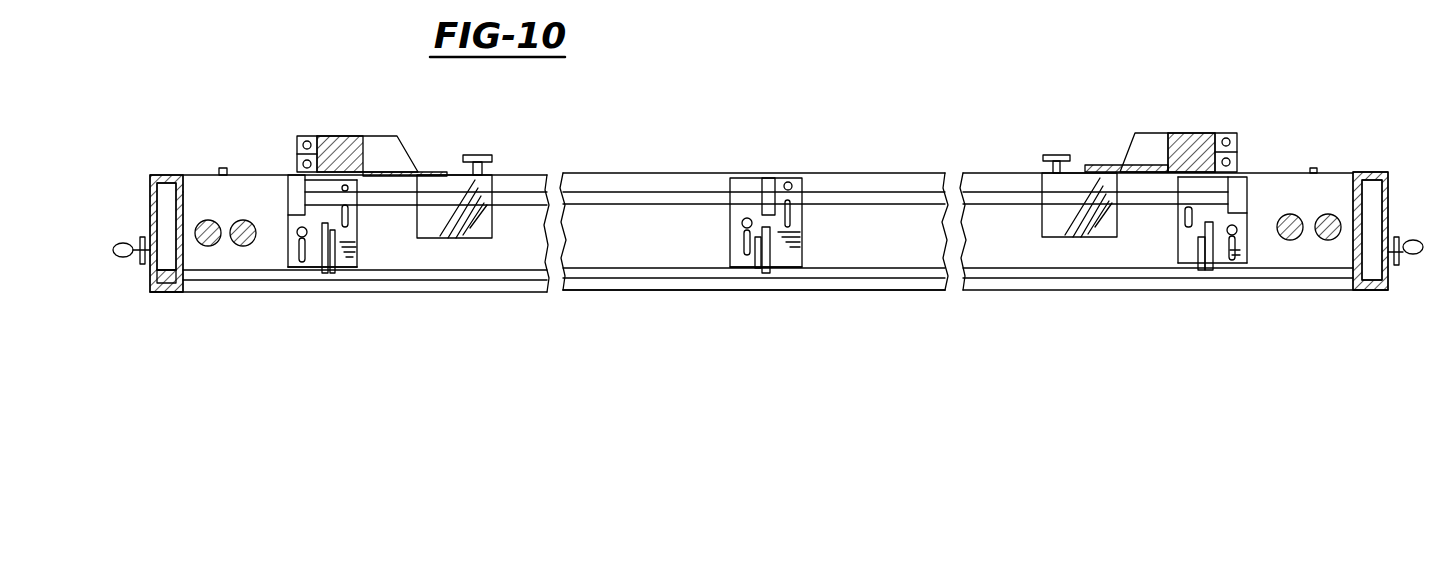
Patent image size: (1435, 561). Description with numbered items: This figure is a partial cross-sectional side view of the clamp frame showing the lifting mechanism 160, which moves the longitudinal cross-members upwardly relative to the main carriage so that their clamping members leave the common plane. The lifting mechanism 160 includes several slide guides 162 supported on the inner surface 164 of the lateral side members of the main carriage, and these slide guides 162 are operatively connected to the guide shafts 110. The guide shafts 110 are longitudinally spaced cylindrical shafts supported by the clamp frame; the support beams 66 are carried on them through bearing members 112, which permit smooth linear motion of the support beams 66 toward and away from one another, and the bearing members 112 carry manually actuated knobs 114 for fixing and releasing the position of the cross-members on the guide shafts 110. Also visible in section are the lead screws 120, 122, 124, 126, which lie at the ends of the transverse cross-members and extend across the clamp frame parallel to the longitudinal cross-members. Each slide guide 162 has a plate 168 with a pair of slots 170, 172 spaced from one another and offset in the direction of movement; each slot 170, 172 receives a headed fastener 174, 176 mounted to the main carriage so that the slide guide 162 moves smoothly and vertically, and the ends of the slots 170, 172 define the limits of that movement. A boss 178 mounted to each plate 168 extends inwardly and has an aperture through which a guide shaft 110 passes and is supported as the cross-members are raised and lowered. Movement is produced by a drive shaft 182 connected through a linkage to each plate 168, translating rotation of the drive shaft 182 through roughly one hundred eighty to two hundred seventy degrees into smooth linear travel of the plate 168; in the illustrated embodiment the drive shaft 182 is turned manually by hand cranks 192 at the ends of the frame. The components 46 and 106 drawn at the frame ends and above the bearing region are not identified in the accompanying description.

The end cap 46 is at (149, 190).
The support beam 66 is at (352, 136).
The mounting block 106 is at (1242, 137).
The guide shaft 110 is at (585, 196).
The bearing member 112 is at (460, 233).
The manually actuated knob 114 is at (480, 155).
The lead screw 120 is at (208, 246).
The lead screw 122 is at (240, 221).
The lead screw 124 is at (1300, 220).
The lead screw 126 is at (1330, 240).
The lifting mechanism 160 is at (763, 284).
The slide guide 162 is at (283, 218).
The inner surface 164 is at (648, 176).
The plate 168 is at (338, 263).
The slot 170 is at (305, 265).
The slot 172 is at (350, 222).
The headed fastener 174 is at (302, 228).
The headed fastener 176 is at (790, 184).
The boss 178 is at (297, 185).
The drive shaft 182 is at (528, 277).
The hand crank 192 is at (123, 258).